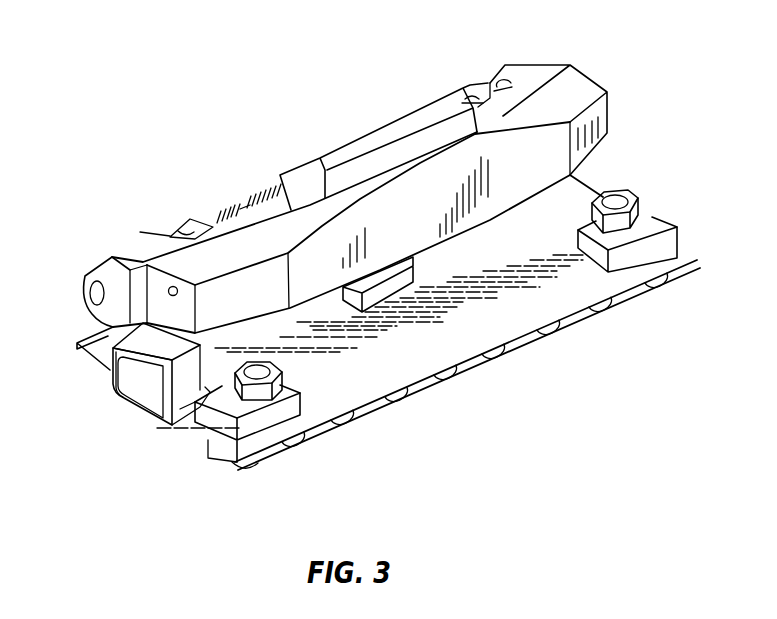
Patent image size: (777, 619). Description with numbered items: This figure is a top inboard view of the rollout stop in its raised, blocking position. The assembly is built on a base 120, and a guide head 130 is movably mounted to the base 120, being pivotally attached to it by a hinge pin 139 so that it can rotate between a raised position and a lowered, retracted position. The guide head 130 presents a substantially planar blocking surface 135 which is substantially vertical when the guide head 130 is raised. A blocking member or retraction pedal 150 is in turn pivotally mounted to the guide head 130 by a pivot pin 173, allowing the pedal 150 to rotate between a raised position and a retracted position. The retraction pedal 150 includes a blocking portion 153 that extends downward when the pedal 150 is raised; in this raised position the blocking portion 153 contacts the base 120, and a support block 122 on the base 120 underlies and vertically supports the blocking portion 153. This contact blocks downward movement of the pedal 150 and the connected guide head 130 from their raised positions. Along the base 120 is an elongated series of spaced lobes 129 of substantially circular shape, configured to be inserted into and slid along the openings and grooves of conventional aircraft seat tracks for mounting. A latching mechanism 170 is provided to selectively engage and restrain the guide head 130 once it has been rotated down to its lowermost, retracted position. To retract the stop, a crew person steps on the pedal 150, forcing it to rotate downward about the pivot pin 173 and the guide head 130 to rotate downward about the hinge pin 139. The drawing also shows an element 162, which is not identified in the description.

The base 120 is at (378, 402).
The support block 122 is at (378, 293).
The spaced lobes 129 is at (228, 461).
The guide head 130 is at (591, 75).
The blocking surface 135 is at (520, 162).
The hinge pin 139 is at (97, 293).
The retraction pedal 150 is at (413, 122).
The blocking portion 153 is at (382, 274).
The nut 162 is at (640, 205).
The latching mechanism 170 is at (147, 378).
The pivot pin 173 is at (169, 289).